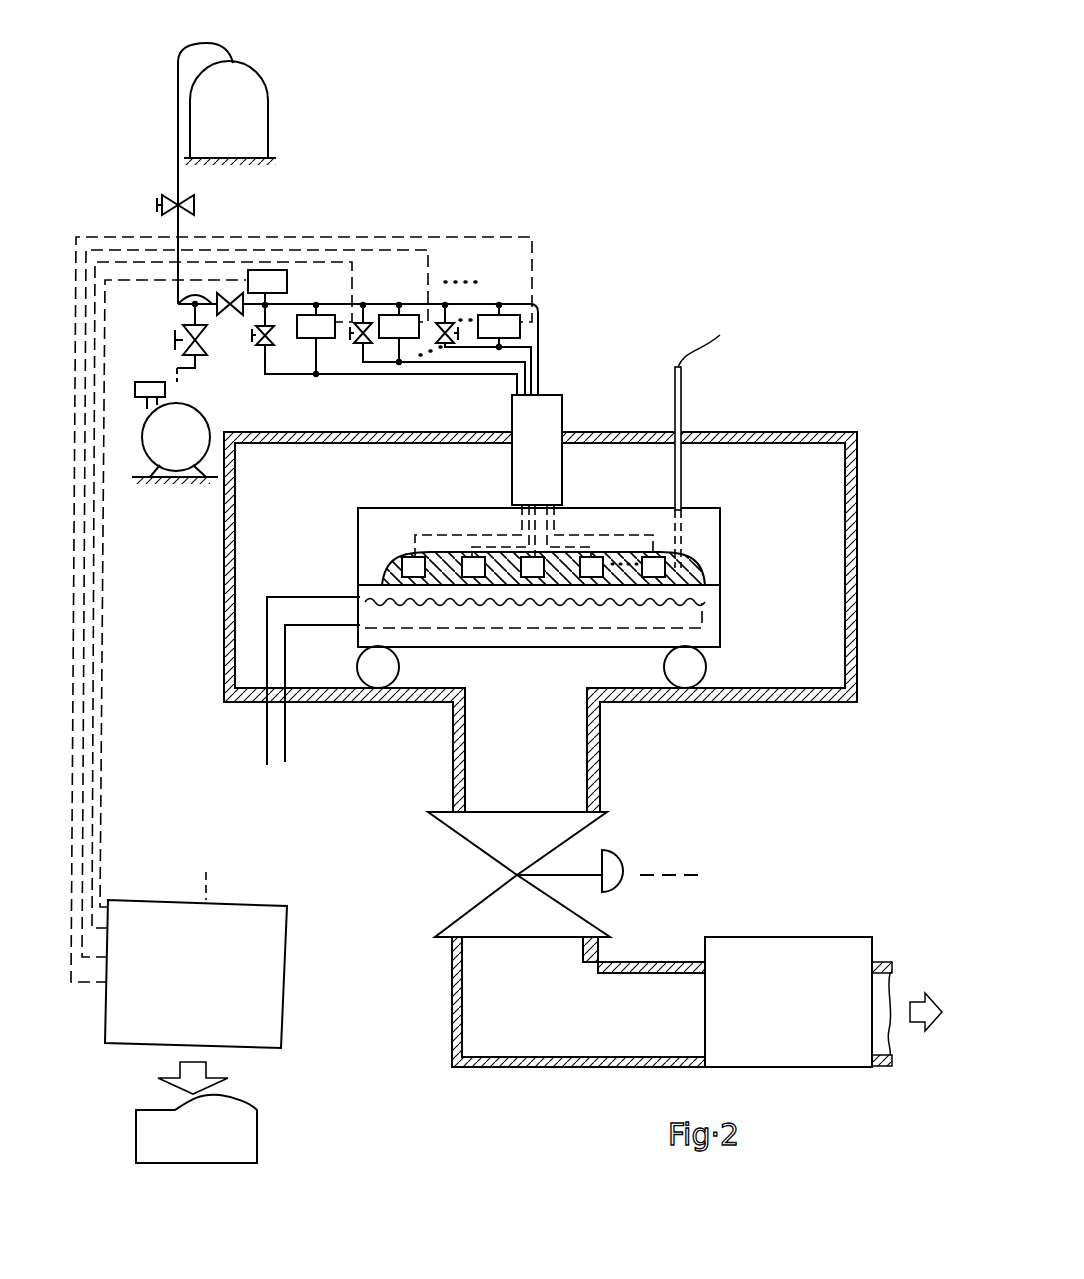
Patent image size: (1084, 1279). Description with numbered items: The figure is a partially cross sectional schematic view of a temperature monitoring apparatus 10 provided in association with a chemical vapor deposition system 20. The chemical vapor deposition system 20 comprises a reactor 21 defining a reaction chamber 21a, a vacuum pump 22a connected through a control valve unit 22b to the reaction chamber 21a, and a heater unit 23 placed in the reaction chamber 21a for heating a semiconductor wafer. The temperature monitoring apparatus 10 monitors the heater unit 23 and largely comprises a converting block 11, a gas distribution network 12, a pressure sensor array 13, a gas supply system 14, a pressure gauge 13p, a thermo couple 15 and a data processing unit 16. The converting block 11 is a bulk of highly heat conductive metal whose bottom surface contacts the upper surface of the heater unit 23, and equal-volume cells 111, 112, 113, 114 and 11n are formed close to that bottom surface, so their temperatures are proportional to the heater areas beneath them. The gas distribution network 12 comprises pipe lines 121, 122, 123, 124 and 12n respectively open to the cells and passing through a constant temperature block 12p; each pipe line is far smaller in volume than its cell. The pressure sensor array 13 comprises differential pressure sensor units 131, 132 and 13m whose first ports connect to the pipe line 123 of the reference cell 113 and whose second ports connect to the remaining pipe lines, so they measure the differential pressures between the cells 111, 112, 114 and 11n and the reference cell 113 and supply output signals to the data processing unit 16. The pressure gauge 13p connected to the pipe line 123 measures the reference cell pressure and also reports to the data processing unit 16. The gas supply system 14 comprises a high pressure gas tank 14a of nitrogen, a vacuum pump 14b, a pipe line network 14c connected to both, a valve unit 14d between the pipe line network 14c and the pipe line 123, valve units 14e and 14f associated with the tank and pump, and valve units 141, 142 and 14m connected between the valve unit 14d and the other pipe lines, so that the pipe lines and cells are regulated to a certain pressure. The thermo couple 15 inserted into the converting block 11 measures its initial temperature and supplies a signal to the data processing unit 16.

The temperature monitoring apparatus 10 is at (598, 337).
The converting block 11 is at (720, 540).
The cell 111 is at (413, 578).
The cell 112 is at (473, 578).
The reference cell 113 is at (533, 578).
The cell 114 is at (592, 578).
The cell 11n is at (652, 578).
The gas distribution network 12 is at (574, 432).
The constant temperature block 12p is at (562, 460).
The pipe line 12n is at (470, 345).
The pipe line 121 is at (317, 378).
The pipe line 122 is at (480, 548).
The pipe line 123 is at (530, 527).
The pipe line 124 is at (400, 366).
The pressure sensor array 13 is at (546, 290).
The differential pressure sensor unit 131 is at (316, 304).
The differential pressure sensor unit 132 is at (364, 306).
The differential pressure sensor unit 13m is at (500, 312).
The pressure gauge 13p is at (272, 270).
The gas supply system 14 is at (306, 105).
The high pressure gas tank 14a is at (247, 63).
The vacuum pump 14b is at (208, 428).
The pipe line network 14c is at (180, 297).
The valve unit 14d is at (228, 291).
The valve unit 14e is at (172, 197).
The valve unit 14f is at (175, 341).
The valve unit 14m is at (447, 320).
The valve unit 141 is at (257, 338).
The valve unit 142 is at (363, 350).
The thermo couple 15 is at (682, 400).
The data processing unit 16 is at (285, 1031).
The chemical vapor deposition system 20 is at (833, 392).
The reactor 21 is at (762, 432).
The reaction chamber 21a is at (297, 541).
The vacuum pump 22a is at (795, 937).
The control valve unit 22b is at (590, 831).
The heater unit 23 is at (720, 628).